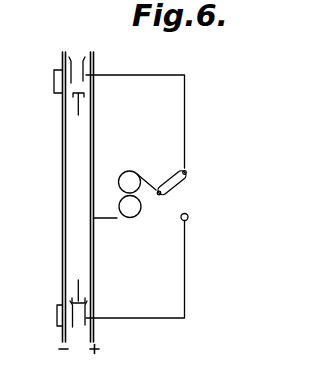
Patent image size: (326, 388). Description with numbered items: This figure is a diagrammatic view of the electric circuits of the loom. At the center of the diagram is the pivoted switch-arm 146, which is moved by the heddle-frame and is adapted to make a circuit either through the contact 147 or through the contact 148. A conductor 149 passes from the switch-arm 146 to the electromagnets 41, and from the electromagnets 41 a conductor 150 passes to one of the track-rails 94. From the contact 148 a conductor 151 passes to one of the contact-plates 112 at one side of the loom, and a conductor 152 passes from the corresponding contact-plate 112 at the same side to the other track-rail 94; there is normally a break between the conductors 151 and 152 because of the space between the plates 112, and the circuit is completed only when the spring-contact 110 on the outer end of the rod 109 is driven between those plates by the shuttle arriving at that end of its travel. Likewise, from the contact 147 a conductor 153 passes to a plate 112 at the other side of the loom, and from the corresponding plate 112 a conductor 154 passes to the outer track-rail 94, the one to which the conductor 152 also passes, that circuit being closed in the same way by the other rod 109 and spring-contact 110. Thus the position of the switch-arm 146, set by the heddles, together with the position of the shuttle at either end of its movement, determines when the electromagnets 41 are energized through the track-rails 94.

The electromagnets 41 is at (121, 194).
The track-rails 94 is at (62, 262).
The rod 109 is at (76, 117).
The spring-contact 110 is at (72, 95).
The contact-plates 112 is at (77, 57).
The switch-arm 146 is at (188, 184).
The spring-contact 147 is at (189, 168).
The spring-contact 148 is at (190, 217).
The conductor 149 is at (146, 173).
The conductor 150 is at (117, 220).
The conductor 151 is at (184, 280).
The conductor 152 is at (56, 319).
The conductor 153 is at (184, 88).
The conductor 154 is at (54, 82).